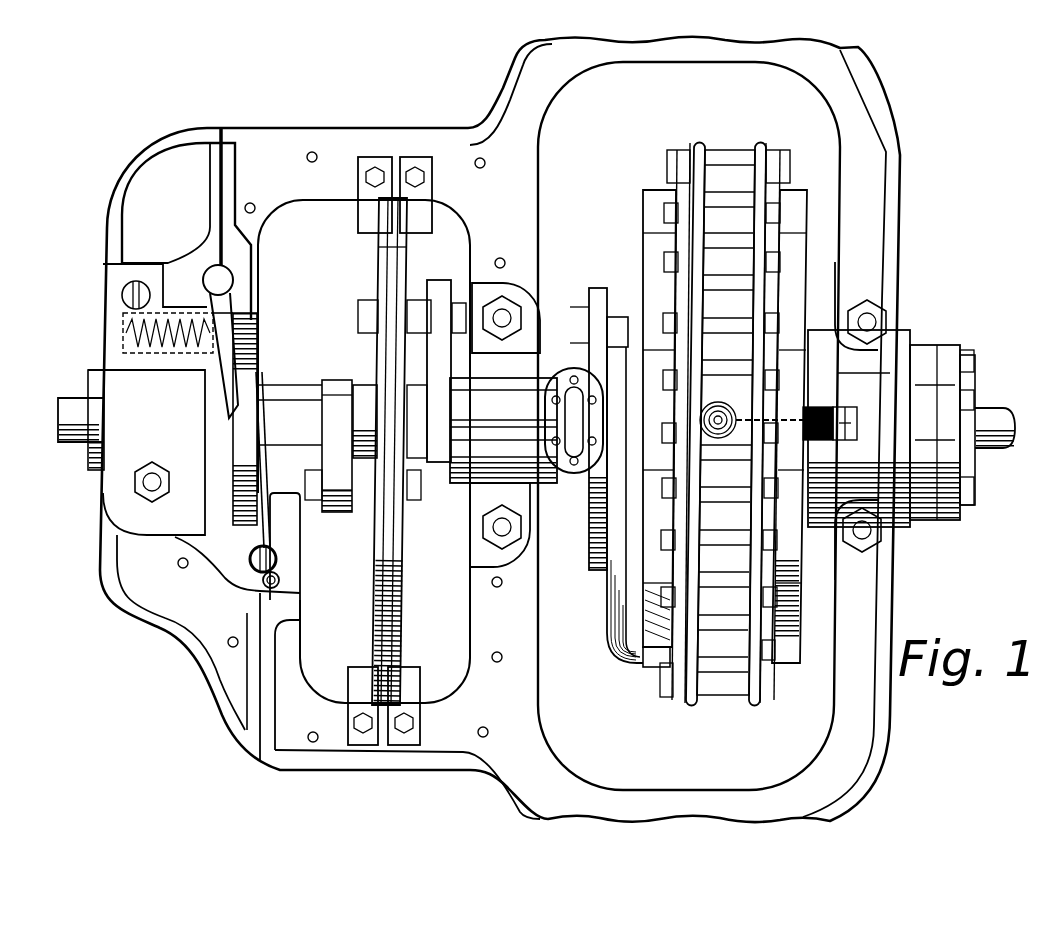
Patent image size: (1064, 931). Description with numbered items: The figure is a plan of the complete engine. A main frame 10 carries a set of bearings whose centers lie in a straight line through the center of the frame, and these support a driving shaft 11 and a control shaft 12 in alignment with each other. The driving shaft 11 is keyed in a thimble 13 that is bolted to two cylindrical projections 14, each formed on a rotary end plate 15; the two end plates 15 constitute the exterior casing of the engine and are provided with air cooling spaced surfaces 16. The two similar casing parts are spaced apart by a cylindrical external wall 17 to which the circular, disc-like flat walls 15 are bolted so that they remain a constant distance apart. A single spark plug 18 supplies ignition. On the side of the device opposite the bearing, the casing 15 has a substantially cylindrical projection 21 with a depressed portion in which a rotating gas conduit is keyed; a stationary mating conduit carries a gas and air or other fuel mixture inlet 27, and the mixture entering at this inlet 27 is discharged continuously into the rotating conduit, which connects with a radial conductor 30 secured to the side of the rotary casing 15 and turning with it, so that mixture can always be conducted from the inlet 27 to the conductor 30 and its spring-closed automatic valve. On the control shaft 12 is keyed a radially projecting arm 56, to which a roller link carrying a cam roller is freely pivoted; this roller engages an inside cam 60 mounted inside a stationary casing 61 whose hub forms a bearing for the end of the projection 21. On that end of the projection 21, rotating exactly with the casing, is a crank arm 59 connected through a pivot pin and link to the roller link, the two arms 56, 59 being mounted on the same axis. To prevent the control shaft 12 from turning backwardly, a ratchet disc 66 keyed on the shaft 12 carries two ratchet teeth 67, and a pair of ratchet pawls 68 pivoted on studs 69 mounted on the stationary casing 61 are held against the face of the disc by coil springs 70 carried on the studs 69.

The main frame 10 is at (893, 256).
The driving shaft 11 is at (995, 417).
The control shaft 12 is at (70, 410).
The thimble 13 is at (947, 513).
The cylindrical projection 14 is at (923, 513).
The rotary end plate 15 is at (695, 145).
The air cooling spaced surfaces 16 is at (653, 207).
The cylindrical external wall 17 is at (720, 160).
The spark plug 18 is at (718, 402).
The cylindrical projection 21 is at (636, 354).
The fuel mixture inlet 27 is at (574, 413).
The radial conductor 30 is at (611, 650).
The arm 56 is at (335, 397).
The crank arm 59 is at (440, 287).
The inside cam 60 is at (390, 273).
The casing 61 is at (330, 710).
The ratchet disc 66 is at (257, 357).
The ratchet teeth 67 is at (227, 420).
The ratchet pawls 68 is at (230, 394).
The studs 69 is at (277, 555).
The coil springs 70 is at (279, 578).